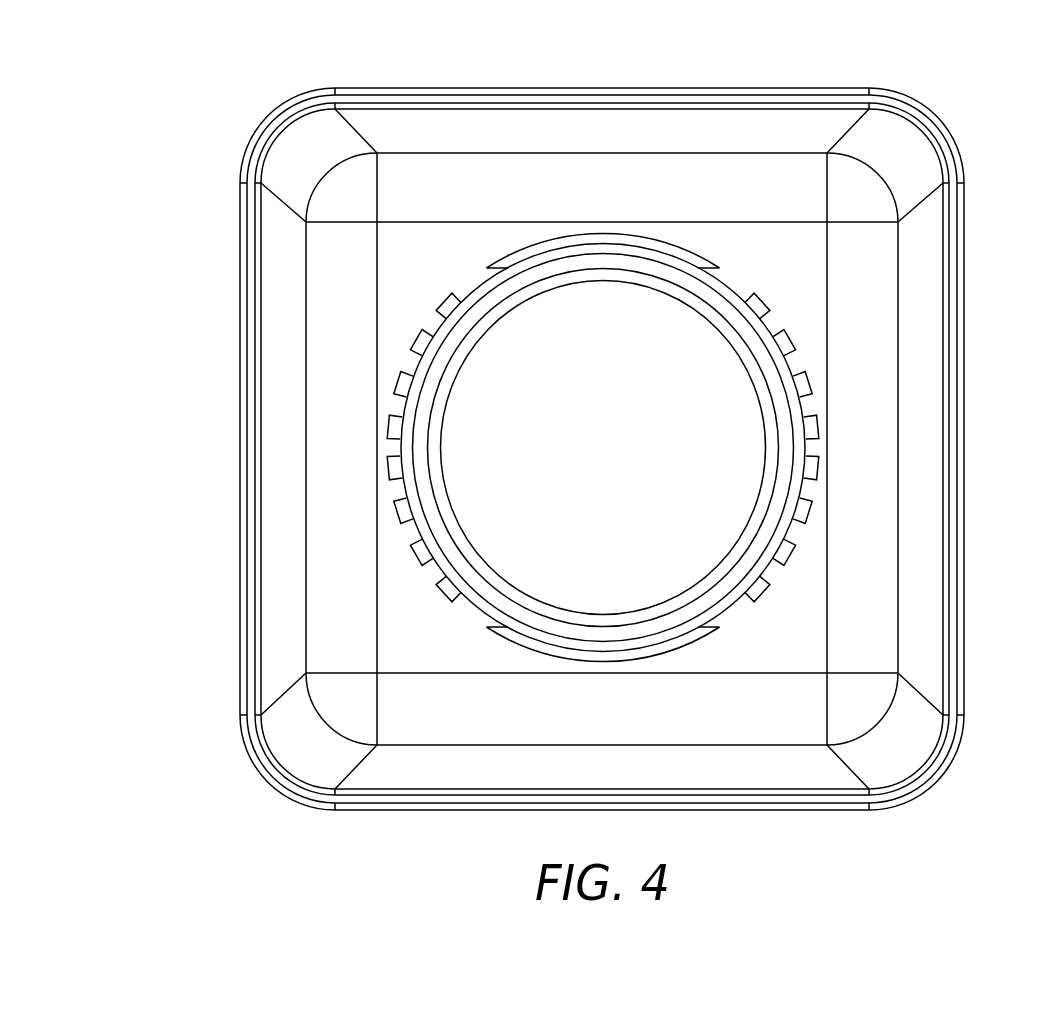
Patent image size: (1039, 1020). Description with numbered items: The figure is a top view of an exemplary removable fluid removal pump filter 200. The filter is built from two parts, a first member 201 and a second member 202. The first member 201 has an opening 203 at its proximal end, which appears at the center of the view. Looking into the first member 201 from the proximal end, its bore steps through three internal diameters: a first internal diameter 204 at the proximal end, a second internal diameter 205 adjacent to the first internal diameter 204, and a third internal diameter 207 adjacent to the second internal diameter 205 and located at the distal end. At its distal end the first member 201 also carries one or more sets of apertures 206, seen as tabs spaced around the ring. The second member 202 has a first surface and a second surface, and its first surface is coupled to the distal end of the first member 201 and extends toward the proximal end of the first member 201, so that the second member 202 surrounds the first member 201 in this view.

The removable fluid removal pump filter 200 is at (181, 108).
The first member 201 is at (401, 485).
The second member 202 is at (816, 793).
The opening 203 is at (614, 461).
The first internal diameter 204 is at (548, 257).
The second internal diameter 205 is at (645, 268).
The sets of apertures 206 is at (806, 447).
The third internal diameter 207 is at (707, 312).